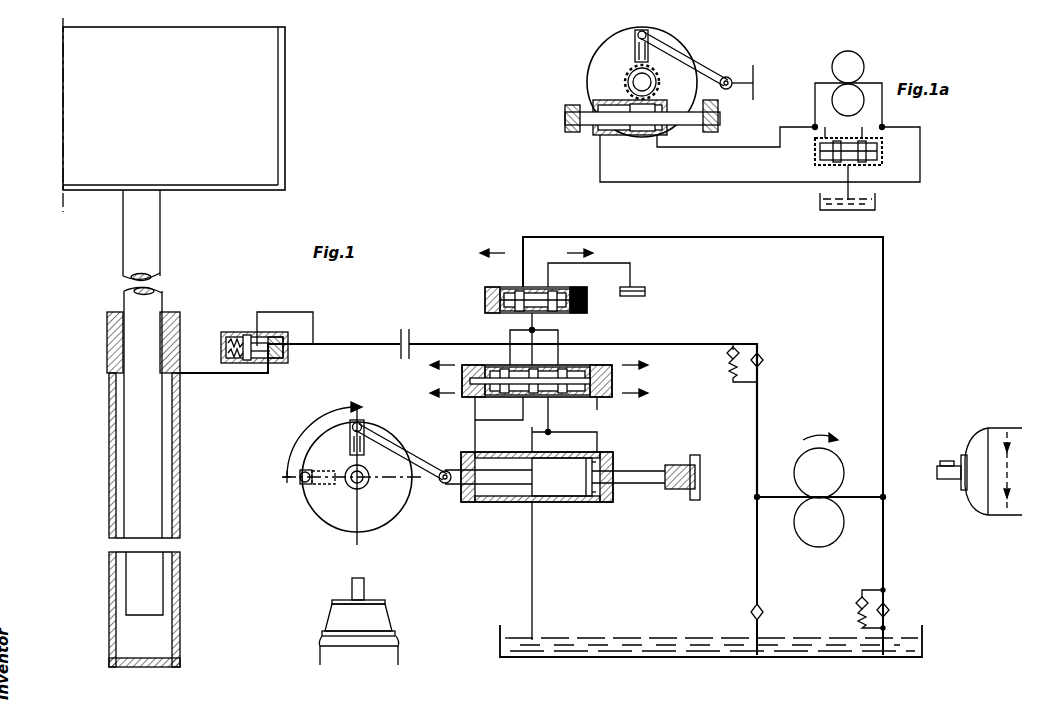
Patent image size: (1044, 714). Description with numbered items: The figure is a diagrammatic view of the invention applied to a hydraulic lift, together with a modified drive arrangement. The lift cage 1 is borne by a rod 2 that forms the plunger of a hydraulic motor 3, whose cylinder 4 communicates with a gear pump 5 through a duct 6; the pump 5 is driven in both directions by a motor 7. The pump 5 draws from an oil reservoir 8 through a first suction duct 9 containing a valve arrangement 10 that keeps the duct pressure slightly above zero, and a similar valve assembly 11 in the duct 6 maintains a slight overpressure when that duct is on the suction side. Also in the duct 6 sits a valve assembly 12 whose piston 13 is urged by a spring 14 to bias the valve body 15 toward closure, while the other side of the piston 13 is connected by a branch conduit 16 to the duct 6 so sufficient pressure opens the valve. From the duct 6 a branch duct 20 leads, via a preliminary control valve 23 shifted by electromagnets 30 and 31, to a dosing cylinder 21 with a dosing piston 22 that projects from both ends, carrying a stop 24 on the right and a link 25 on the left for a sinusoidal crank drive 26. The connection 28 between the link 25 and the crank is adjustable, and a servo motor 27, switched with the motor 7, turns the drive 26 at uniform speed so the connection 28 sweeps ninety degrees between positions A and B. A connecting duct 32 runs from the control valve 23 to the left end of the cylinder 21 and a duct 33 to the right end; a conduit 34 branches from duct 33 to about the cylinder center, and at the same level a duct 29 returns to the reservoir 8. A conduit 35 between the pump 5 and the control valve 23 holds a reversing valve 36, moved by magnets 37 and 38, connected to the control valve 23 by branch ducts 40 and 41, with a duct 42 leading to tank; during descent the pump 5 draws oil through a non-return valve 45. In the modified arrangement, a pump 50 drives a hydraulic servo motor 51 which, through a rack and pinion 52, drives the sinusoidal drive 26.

In FIG. 1, the lift cage 1 is at (278, 118).
In FIG. 1, the rod 2 is at (152, 250).
In FIG. 1, the hydraulic motor 3 is at (181, 462).
In FIG. 1, the cylinder 4 is at (165, 518).
In FIG. 1, the pump 5 is at (835, 467).
In FIG. 1, the duct 6 is at (352, 344).
In FIG. 1, the motor 7 is at (979, 510).
In FIG. 1, the oil reservoir 8 is at (922, 637).
In FIG. 1, the first suction duct 9 is at (886, 566).
In FIG. 1, the valve arrangement 10 is at (892, 602).
In FIG. 1, the valve assembly 11 is at (765, 352).
In FIG. 1, the valve assembly 12 is at (297, 369).
In FIG. 1, the piston 13 is at (247, 335).
In FIG. 1, the spring 14 is at (228, 338).
In FIG. 1, the valve body 15 is at (284, 343).
In FIG. 1, the branch conduit 16 is at (281, 312).
In FIG. 1, the branch duct 20 is at (533, 355).
In FIG. 1, the dosing cylinder 21 is at (556, 502).
In FIG. 1, the dosing piston 22 is at (586, 488).
In FIG. 1, the preliminary control valve 23 is at (569, 397).
In FIG. 1, the stop 24 is at (698, 460).
In FIG. 1, the link 25 is at (420, 463).
In FIG. 1, the sinusoidal drive 26 is at (393, 512).
In FIG. 1A, the sinusoidal drive 26 is at (677, 49).
In FIG. 1, the servo motor 27 is at (380, 620).
In FIG. 1, the connection 28 is at (363, 424).
In FIG. 1A, the connection 28 is at (635, 32).
In FIG. 1, the duct 29 is at (533, 583).
In FIG. 1, the electromagnet 30 is at (475, 405).
In FIG. 1, the electromagnet 31 is at (609, 407).
In FIG. 1, the connecting duct 32 is at (499, 419).
In FIG. 1, the duct 33 is at (598, 431).
In FIG. 1, the conduit 34 is at (537, 428).
In FIG. 1, the conduit 35 is at (703, 367).
In FIG. 1, the reversing valve 36 is at (523, 291).
In FIG. 1, the magnet 37 is at (492, 288).
In FIG. 1, the magnet 38 is at (588, 309).
In FIG. 1, the branch duct 40 is at (510, 333).
In FIG. 1, the branch duct 41 is at (558, 333).
In FIG. 1, the duct 42 is at (611, 263).
In FIG. 1, the non-return valve 45 is at (752, 603).
In FIG. 1A, the pump 50 is at (858, 66).
In FIG. 1A, the hydraulic servo motor 51 is at (636, 135).
In FIG. 1A, the eccentric gear 52 is at (657, 84).